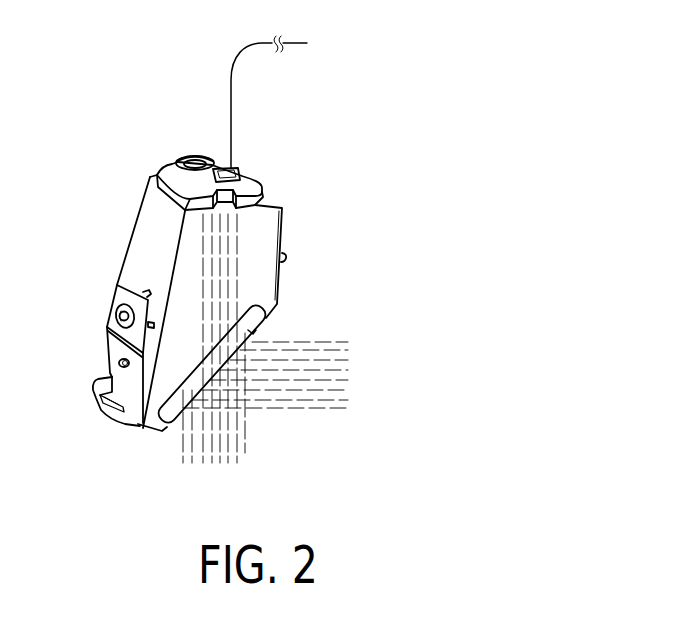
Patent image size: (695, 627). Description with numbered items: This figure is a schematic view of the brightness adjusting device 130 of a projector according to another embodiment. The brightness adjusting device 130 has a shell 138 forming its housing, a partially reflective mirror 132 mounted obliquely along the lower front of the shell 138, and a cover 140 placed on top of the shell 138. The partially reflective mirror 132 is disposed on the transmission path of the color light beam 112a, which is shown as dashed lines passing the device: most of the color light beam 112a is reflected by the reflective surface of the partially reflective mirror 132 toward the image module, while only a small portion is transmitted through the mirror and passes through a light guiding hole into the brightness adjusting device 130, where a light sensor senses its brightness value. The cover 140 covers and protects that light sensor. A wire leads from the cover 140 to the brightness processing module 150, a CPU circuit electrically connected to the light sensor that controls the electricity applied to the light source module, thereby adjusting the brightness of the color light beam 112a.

The brightness adjusting device 130 is at (108, 152).
The partially reflective mirror 132 is at (178, 424).
The shell 138 is at (143, 244).
The cover 140 is at (250, 172).
The brightness processing module 150 is at (297, 96).
The color light beam 112a is at (243, 450).